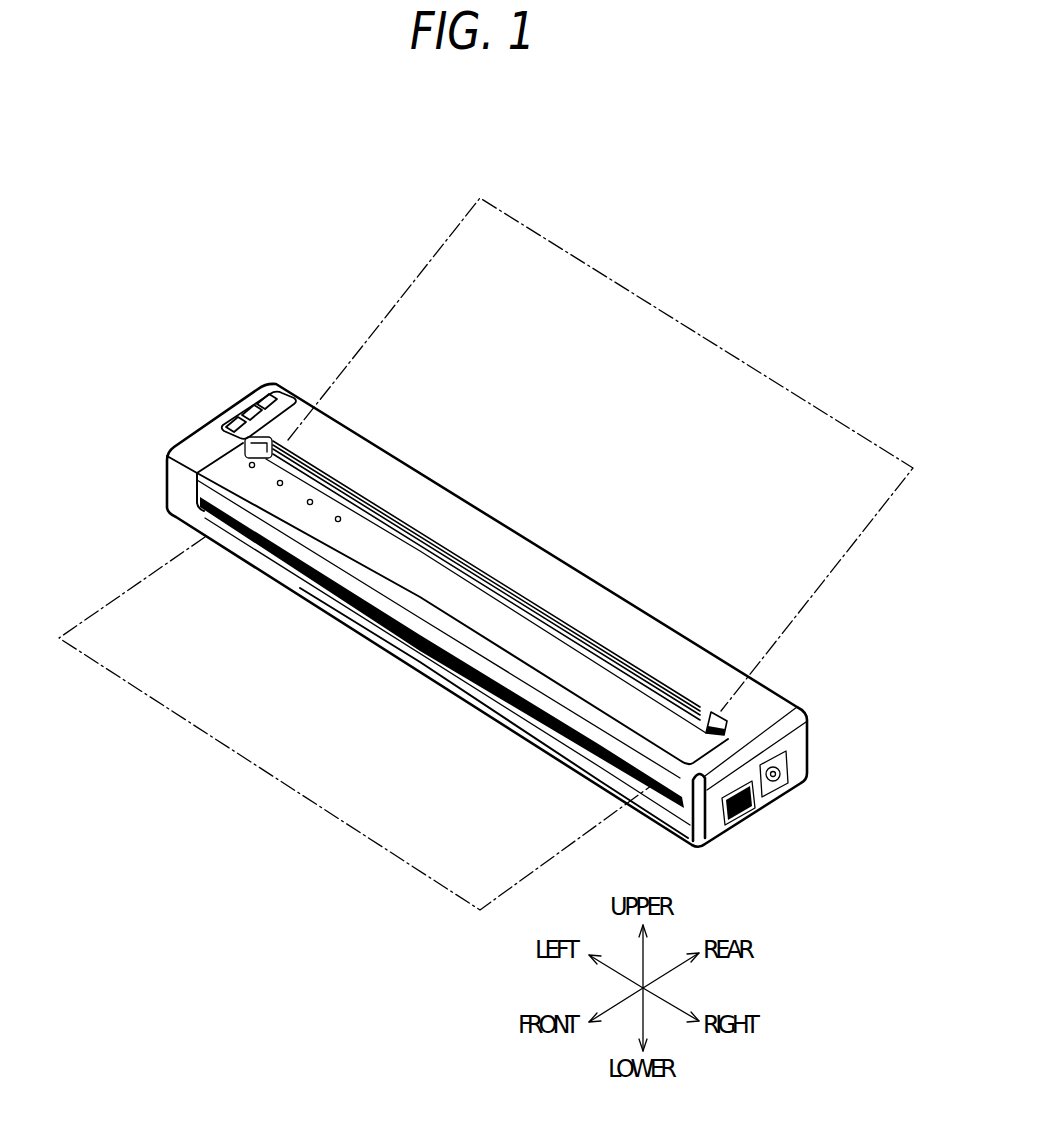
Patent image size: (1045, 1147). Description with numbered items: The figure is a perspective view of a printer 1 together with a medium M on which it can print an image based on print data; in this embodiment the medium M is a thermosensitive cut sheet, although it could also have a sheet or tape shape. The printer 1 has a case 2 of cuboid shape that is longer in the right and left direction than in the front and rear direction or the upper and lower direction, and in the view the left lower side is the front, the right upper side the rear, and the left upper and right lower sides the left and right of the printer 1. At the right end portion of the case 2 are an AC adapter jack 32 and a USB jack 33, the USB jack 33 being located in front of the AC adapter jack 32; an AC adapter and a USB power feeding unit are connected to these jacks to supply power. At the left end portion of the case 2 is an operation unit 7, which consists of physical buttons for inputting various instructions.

The printer 1 is at (258, 312).
The case 2 is at (800, 703).
The operation unit 7 is at (290, 392).
The medium M is at (681, 322).
The AC adapter jack 32 is at (790, 790).
The USB jack 33 is at (745, 826).